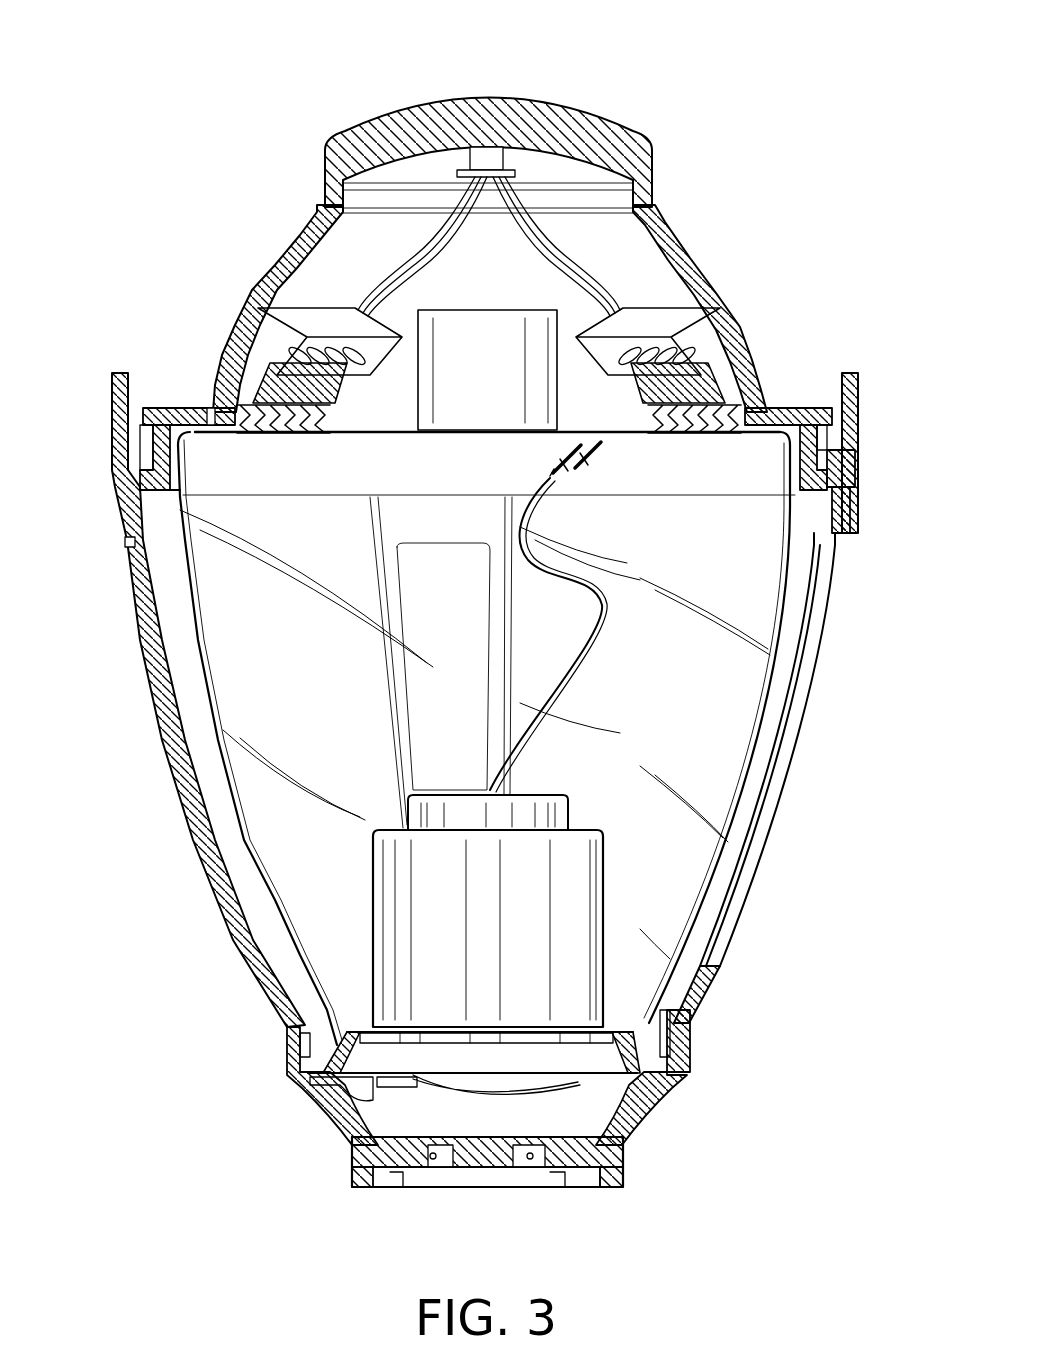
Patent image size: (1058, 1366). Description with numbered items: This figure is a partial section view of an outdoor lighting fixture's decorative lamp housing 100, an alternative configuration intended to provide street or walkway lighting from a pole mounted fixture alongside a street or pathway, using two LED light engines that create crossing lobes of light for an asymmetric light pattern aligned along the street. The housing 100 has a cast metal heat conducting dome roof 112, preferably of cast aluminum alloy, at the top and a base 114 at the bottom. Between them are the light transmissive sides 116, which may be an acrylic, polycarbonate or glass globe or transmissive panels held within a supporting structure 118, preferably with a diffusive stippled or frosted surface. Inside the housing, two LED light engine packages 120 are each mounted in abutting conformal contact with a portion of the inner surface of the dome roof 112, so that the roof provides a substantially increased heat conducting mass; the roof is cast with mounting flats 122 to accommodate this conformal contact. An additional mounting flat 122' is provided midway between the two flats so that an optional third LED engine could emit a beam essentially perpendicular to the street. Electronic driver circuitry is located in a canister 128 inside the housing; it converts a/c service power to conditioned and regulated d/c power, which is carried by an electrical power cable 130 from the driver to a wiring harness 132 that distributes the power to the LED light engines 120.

The decorative lamp housing 100 is at (501, 593).
The dome roof 112 is at (610, 112).
The base 114 is at (700, 1050).
The light transmissive sides 116 is at (775, 770).
The supporting structure 118 is at (130, 631).
The LED light engine package 120 is at (283, 348).
The mounting flat 122 is at (499, 281).
The additional mounting flat 122' is at (487, 370).
The canister 128 is at (430, 933).
The electrical power cable 130 is at (600, 643).
The wiring harness 132 is at (484, 152).